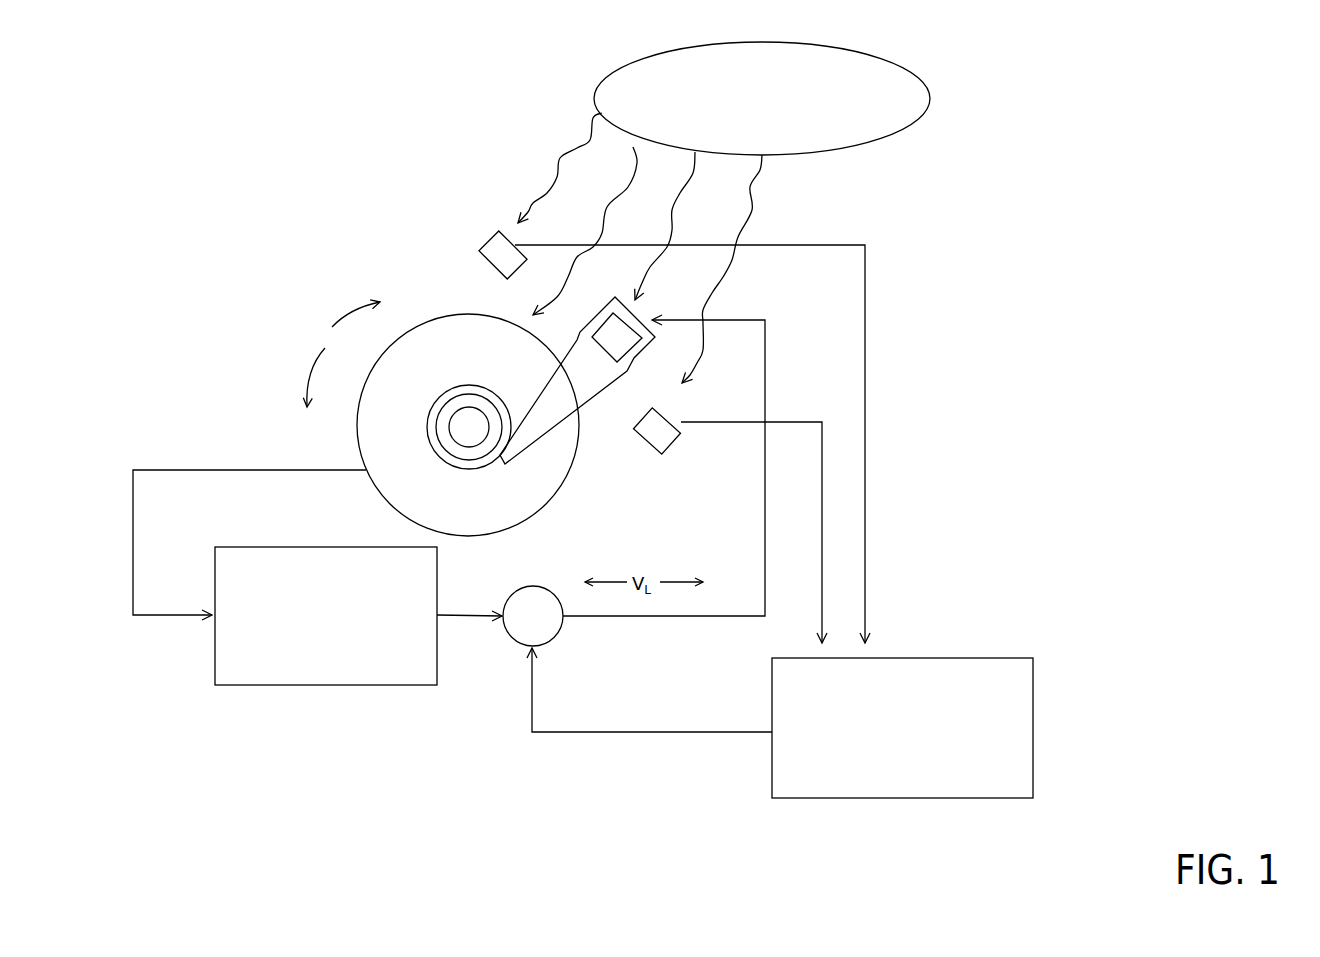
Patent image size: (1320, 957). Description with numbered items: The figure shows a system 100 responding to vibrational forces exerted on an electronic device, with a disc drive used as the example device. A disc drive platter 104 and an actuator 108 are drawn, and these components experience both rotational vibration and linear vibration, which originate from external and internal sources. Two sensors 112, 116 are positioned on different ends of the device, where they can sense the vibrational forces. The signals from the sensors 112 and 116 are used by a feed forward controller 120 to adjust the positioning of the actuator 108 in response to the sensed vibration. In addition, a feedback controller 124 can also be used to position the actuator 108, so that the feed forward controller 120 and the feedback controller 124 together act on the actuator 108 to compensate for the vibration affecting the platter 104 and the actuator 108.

The system 100 is at (795, 214).
The disc drive platter 104 is at (420, 323).
The actuator 108 is at (635, 363).
The sensor 112 is at (498, 230).
The sensor 116 is at (650, 447).
The feed forward controller 120 is at (903, 800).
The feedback controller 124 is at (327, 687).